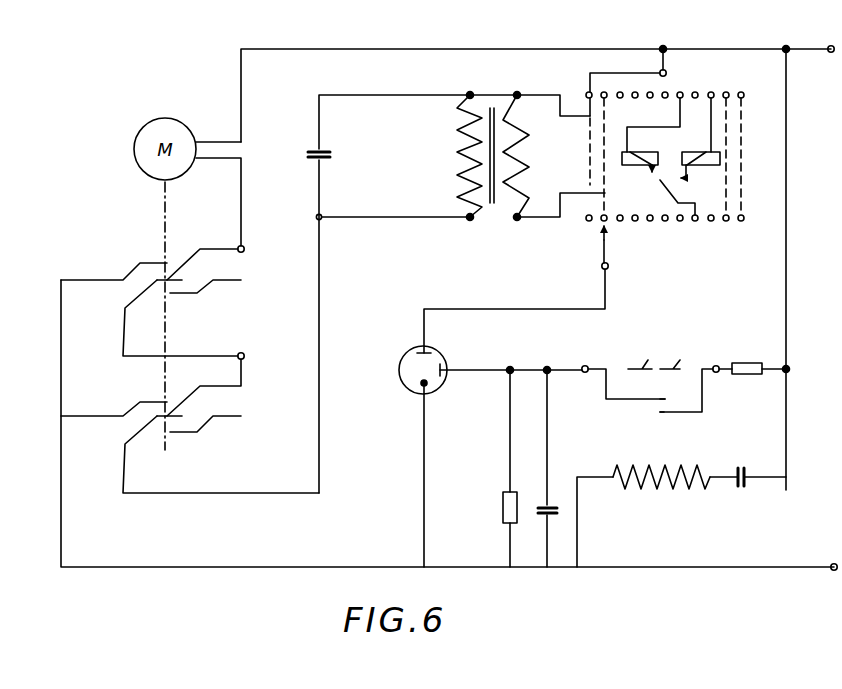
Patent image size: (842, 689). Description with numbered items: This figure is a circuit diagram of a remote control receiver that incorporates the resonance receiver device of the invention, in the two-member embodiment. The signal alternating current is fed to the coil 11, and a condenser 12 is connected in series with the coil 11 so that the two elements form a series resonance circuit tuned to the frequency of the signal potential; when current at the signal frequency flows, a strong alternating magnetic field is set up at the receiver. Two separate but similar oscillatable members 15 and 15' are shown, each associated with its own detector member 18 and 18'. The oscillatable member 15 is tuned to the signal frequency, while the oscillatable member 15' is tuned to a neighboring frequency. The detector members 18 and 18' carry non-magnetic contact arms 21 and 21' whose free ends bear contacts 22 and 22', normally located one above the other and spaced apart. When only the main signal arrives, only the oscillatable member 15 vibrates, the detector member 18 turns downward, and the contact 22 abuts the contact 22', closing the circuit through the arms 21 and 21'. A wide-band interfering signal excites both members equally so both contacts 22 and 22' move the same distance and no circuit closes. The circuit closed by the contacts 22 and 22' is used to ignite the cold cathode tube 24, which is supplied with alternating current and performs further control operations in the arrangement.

The coil 11 is at (676, 488).
The condenser 12 is at (744, 479).
The oscillatable member 15 is at (641, 355).
The oscillatable member 15' is at (677, 355).
The detector member 18 is at (597, 357).
The detector member 18' is at (719, 355).
The contact arm 21 is at (613, 388).
The contact arm 21' is at (703, 390).
The contact 22 is at (636, 420).
The contact 22' is at (678, 427).
The cold cathode tube 24 is at (402, 358).